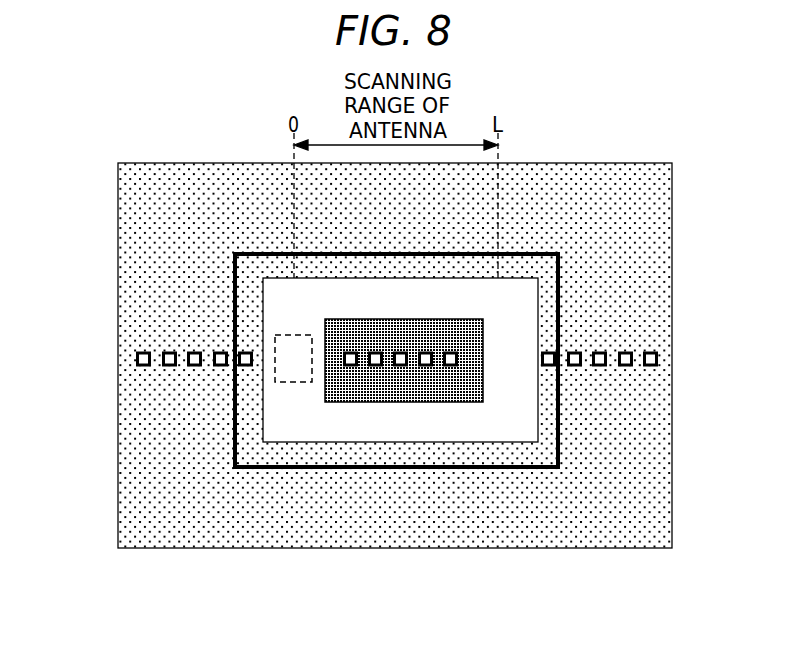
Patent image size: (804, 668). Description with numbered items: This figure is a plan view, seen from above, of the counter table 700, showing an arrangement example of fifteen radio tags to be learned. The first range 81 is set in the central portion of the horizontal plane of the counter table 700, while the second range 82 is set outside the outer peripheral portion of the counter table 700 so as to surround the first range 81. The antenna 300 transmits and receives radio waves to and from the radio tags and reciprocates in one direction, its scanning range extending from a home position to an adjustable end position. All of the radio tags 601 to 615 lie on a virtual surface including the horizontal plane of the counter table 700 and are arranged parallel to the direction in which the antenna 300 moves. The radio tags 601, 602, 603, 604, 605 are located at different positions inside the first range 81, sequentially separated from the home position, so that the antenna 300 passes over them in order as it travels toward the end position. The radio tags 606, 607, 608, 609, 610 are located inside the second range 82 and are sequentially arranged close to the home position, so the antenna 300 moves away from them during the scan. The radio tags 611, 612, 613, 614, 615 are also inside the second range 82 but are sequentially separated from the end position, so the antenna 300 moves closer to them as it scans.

The first range 81 is at (355, 325).
The second range 82 is at (556, 188).
The counter table 700 is at (232, 282).
The antenna 300 is at (274, 343).
The radio tag 601 is at (350, 367).
The radio tag 602 is at (375, 367).
The radio tag 603 is at (400, 367).
The radio tag 604 is at (425, 367).
The radio tag 605 is at (450, 367).
The radio tag 606 is at (143, 367).
The radio tag 607 is at (169, 367).
The radio tag 608 is at (194, 367).
The radio tag 609 is at (220, 367).
The radio tag 610 is at (245, 367).
The radio tag 611 is at (548, 367).
The radio tag 612 is at (574, 367).
The radio tag 613 is at (599, 367).
The radio tag 614 is at (625, 367).
The radio tag 615 is at (650, 367).